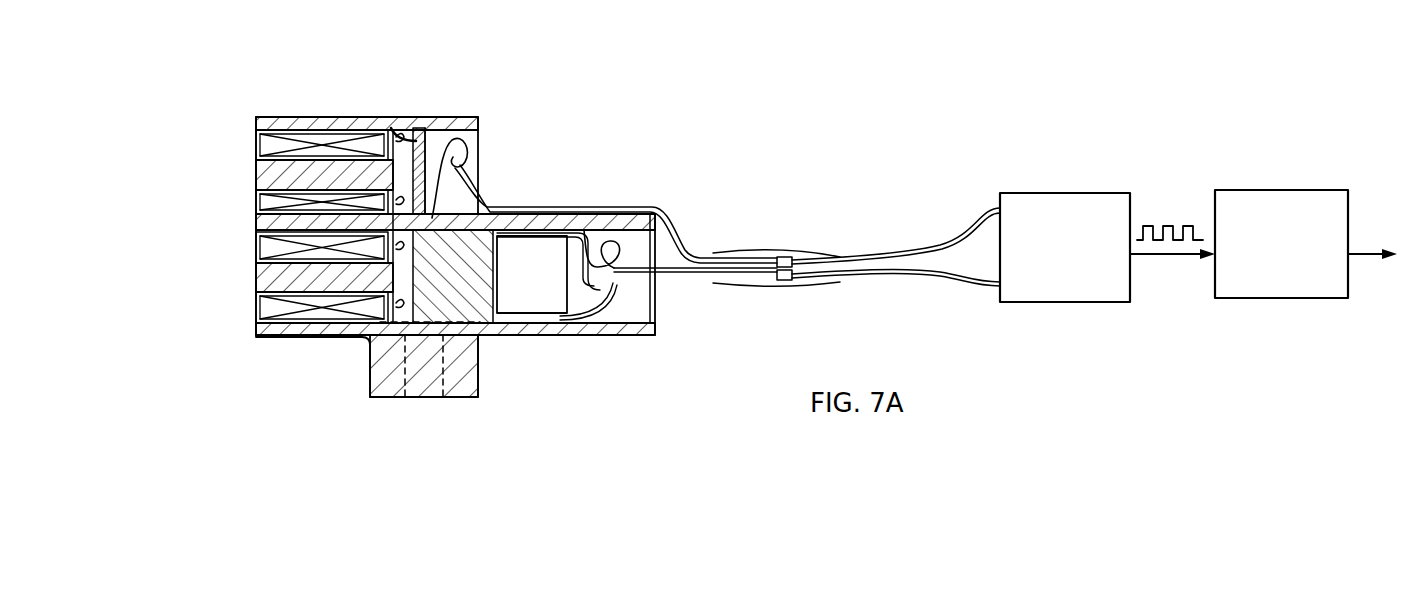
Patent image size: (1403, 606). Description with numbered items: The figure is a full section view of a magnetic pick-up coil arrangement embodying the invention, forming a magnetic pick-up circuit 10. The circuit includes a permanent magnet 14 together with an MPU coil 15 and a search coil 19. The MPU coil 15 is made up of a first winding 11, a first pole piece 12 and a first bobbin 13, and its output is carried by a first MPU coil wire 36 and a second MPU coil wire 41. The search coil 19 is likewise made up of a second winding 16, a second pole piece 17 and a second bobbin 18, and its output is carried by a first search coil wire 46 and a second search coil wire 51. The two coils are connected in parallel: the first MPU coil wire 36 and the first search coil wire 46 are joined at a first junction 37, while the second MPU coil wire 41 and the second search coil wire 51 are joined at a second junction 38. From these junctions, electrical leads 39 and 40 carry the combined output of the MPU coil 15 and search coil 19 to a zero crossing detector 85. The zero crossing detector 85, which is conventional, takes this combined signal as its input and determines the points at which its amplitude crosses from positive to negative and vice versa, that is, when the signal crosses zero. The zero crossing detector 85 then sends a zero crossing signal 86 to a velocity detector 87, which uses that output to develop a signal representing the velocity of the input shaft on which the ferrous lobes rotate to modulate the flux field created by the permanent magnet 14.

The magnetic pick-up circuit 10 is at (244, 92).
The first winding 11 is at (310, 325).
The first pole piece 12 is at (258, 283).
The first bobbin 13 is at (392, 338).
The permanent magnet 14 is at (480, 332).
The MPU coil 15 is at (338, 346).
The second winding 16 is at (333, 135).
The second pole piece 17 is at (257, 177).
The second bobbin 18 is at (391, 128).
The search coil 19 is at (351, 80).
The first MPU coil wire 36 is at (610, 314).
The first junction 37 is at (788, 281).
The second junction 38 is at (789, 259).
The lead 39 is at (813, 283).
The lead 40 is at (818, 258).
The second MPU coil wire 41 is at (587, 240).
The first search coil wire 46 is at (443, 197).
The second search coil wire 51 is at (400, 216).
The zero crossing detector 85 is at (1059, 180).
The zero crossing signal 86 is at (1169, 211).
The velocity detector 87 is at (1258, 178).